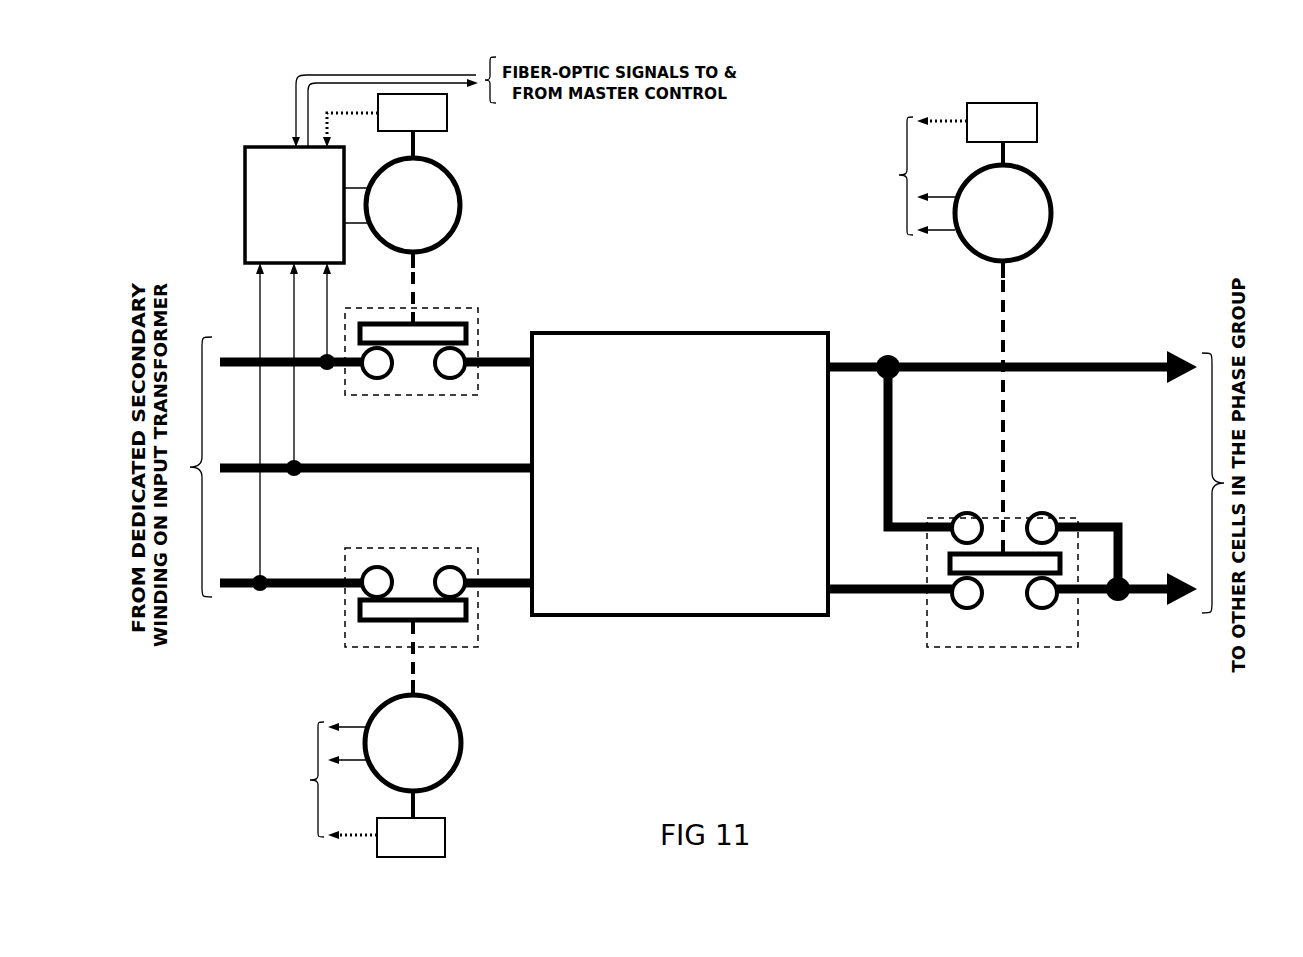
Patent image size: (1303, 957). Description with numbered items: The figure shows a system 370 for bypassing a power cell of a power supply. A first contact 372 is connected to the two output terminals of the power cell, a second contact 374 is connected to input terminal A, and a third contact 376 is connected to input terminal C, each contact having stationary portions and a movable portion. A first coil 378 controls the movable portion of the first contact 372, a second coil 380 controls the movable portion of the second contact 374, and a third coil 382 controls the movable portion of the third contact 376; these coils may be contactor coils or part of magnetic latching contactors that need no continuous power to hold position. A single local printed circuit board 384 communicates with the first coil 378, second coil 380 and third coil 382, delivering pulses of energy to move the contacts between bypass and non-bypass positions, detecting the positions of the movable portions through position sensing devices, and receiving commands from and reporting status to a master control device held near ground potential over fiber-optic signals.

The system for bypassing a power cell 370 is at (1138, 90).
The first contact 372 is at (972, 648).
The second contact 374 is at (363, 396).
The third contact 376 is at (368, 547).
The first coil 378 is at (1051, 213).
The second coil 380 is at (461, 206).
The third coil 382 is at (461, 752).
The local printed circuit board 384 is at (245, 193).